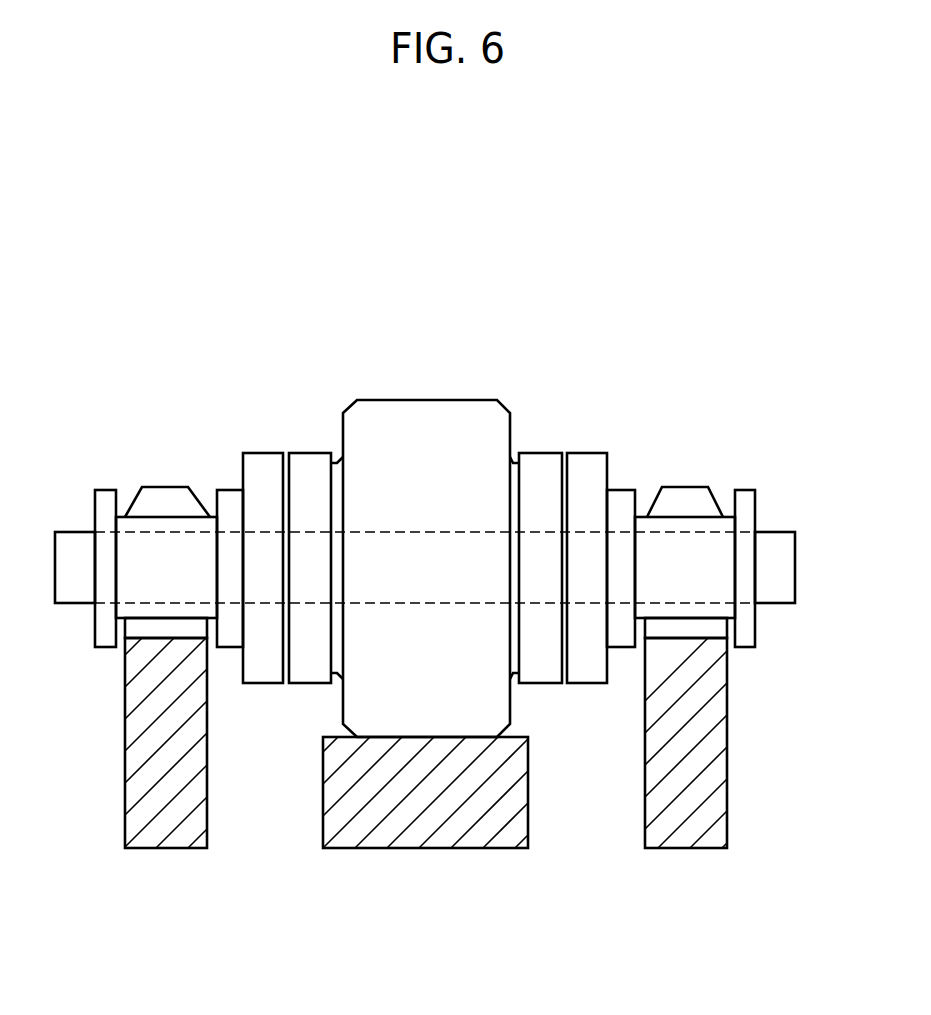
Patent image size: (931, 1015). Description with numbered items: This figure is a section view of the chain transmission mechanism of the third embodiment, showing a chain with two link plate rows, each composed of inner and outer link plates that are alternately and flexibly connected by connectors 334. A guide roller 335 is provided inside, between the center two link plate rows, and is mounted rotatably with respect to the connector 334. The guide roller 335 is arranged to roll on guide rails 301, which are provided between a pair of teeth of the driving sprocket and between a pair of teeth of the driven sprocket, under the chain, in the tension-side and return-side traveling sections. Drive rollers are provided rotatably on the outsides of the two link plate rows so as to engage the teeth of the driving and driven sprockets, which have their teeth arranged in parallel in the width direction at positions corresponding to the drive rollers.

The guide rail 301 is at (505, 808).
The connector 334 is at (777, 540).
The guide roller 335 is at (420, 415).